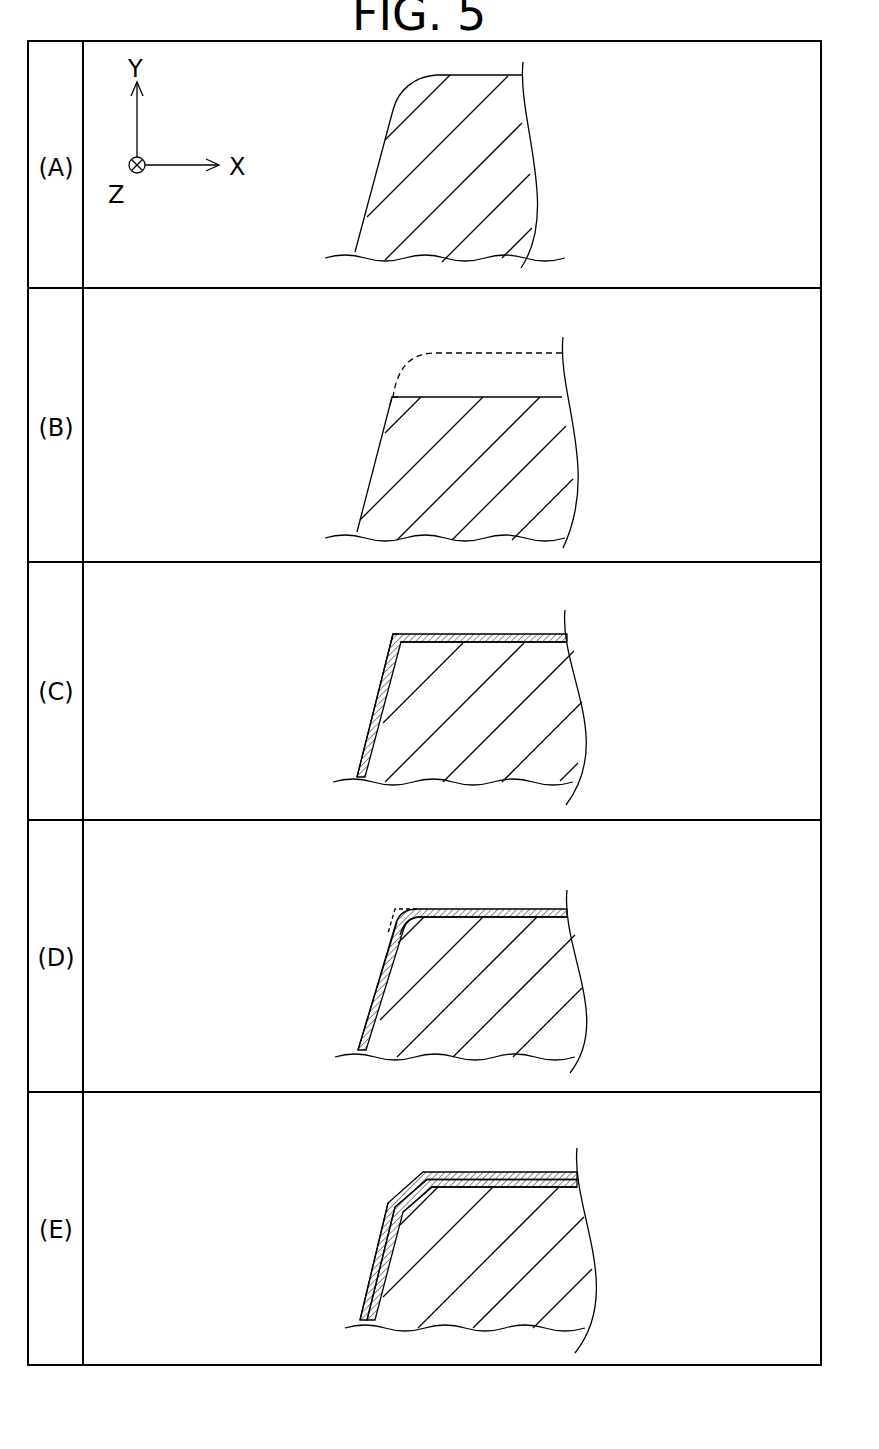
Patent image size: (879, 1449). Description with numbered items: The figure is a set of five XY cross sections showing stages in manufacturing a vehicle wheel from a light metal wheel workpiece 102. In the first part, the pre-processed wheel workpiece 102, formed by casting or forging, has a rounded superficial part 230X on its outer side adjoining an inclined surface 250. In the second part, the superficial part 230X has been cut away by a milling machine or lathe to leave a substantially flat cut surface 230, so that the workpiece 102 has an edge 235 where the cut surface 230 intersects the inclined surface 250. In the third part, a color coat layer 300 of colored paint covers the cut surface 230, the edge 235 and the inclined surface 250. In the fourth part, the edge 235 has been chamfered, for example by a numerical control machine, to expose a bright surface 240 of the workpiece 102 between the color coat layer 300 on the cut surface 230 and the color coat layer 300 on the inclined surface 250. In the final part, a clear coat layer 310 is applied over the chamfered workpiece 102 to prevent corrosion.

The wheel workpiece 102 is at (500, 181).
The inclined surface 250 is at (369, 200).
The superficial part 230X is at (435, 88).
The cut surface 230 is at (487, 397).
The edge 235 is at (392, 396).
The bright surface 240 is at (400, 912).
The color coat layer 300 is at (460, 633).
The clear coat layer 310 is at (553, 1172).